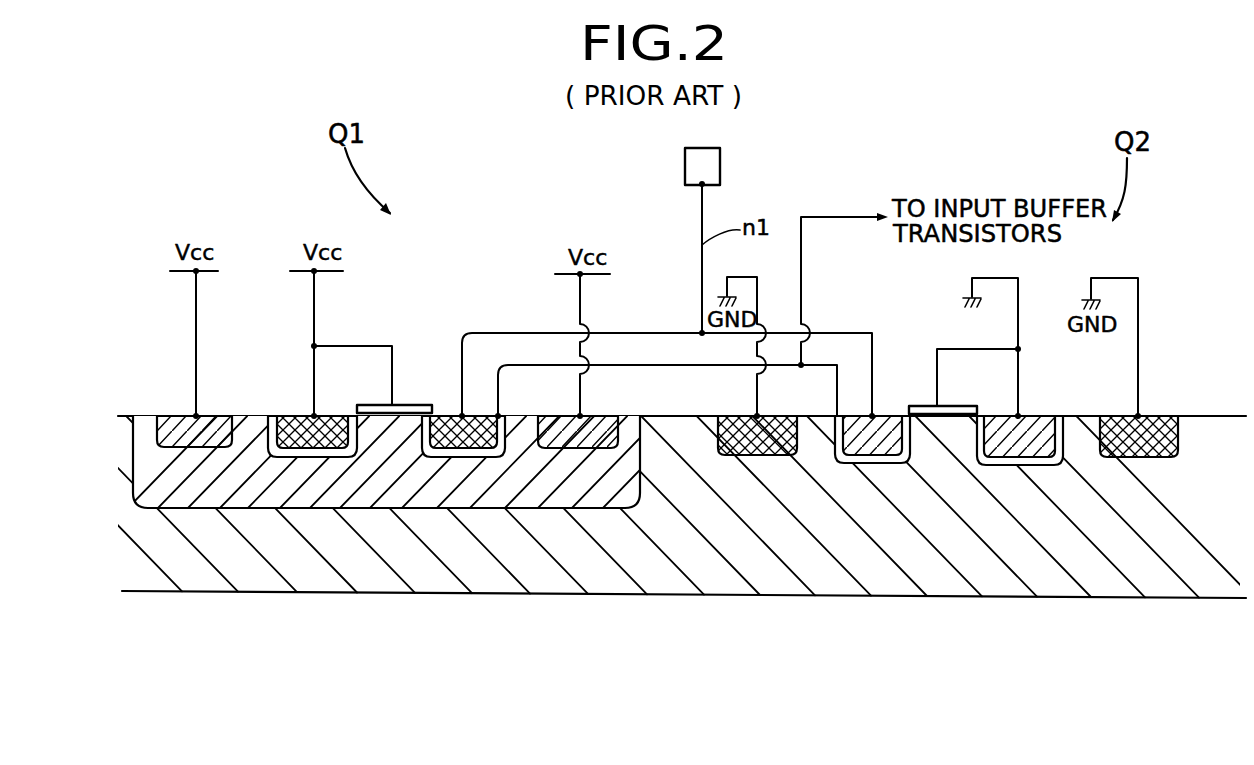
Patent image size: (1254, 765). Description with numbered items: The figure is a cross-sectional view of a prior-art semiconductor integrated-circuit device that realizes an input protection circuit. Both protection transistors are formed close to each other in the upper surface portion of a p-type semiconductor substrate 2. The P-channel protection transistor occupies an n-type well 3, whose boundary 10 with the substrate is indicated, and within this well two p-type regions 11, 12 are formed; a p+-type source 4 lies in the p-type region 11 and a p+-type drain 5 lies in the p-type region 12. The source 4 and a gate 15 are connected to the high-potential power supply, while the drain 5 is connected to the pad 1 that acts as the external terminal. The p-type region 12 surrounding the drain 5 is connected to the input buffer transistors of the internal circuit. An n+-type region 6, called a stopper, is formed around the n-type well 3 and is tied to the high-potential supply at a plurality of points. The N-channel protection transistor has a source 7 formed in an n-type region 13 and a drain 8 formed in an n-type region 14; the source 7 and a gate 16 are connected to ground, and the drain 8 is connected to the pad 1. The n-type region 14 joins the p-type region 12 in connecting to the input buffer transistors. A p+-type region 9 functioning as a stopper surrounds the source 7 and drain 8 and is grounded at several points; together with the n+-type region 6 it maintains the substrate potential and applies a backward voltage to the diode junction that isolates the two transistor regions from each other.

The pad 1 is at (720, 167).
The p-type semiconductor substrate 2 is at (828, 584).
The n-type well 3 is at (458, 497).
The source 4 is at (300, 416).
The drain 5 is at (447, 416).
The n+-type region 6 is at (167, 416).
The source 7 is at (1042, 422).
The drain 8 is at (884, 420).
The p+-type region 9 is at (769, 418).
The pn junction between well and substrate 10 is at (600, 508).
The p-type region 11 is at (272, 418).
The p-type region 12 is at (507, 428).
The n-type region 13 is at (1033, 467).
The n-type region 14 is at (858, 463).
The gate 15 is at (370, 405).
The gate 16 is at (958, 410).